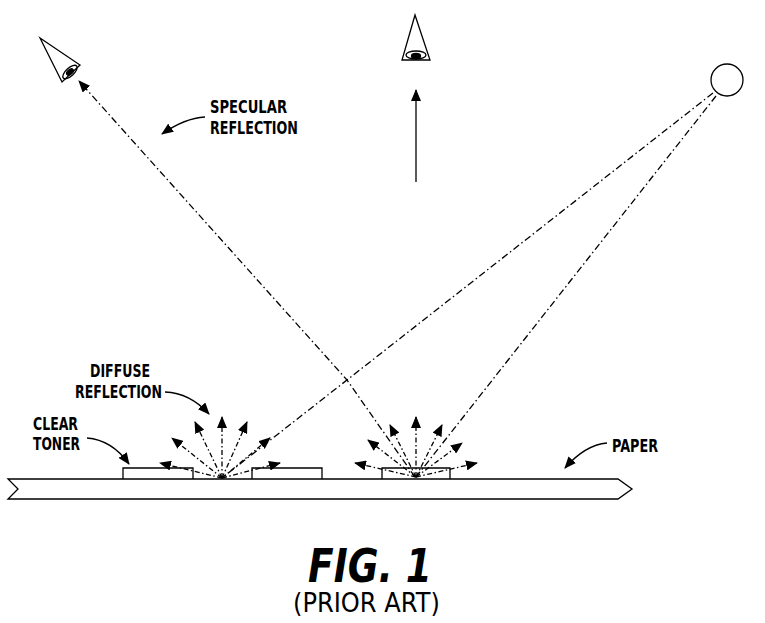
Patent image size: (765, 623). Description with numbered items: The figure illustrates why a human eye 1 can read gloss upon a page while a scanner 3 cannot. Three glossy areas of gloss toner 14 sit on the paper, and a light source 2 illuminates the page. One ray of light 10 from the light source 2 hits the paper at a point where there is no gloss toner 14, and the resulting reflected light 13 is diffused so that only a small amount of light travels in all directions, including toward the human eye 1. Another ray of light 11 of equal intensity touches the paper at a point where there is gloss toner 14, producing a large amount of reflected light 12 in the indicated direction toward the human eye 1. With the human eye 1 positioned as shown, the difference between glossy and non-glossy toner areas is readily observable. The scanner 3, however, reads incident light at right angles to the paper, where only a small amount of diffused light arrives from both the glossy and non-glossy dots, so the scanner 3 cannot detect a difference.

The human eye 1 is at (63, 53).
The light source 2 is at (712, 69).
The scanner 3 is at (423, 37).
The ray of light 10 is at (562, 215).
The ray of light 11 is at (607, 240).
The reflected light 12 is at (200, 215).
The reflected light 13 is at (237, 410).
The gloss toner 14 is at (146, 478).